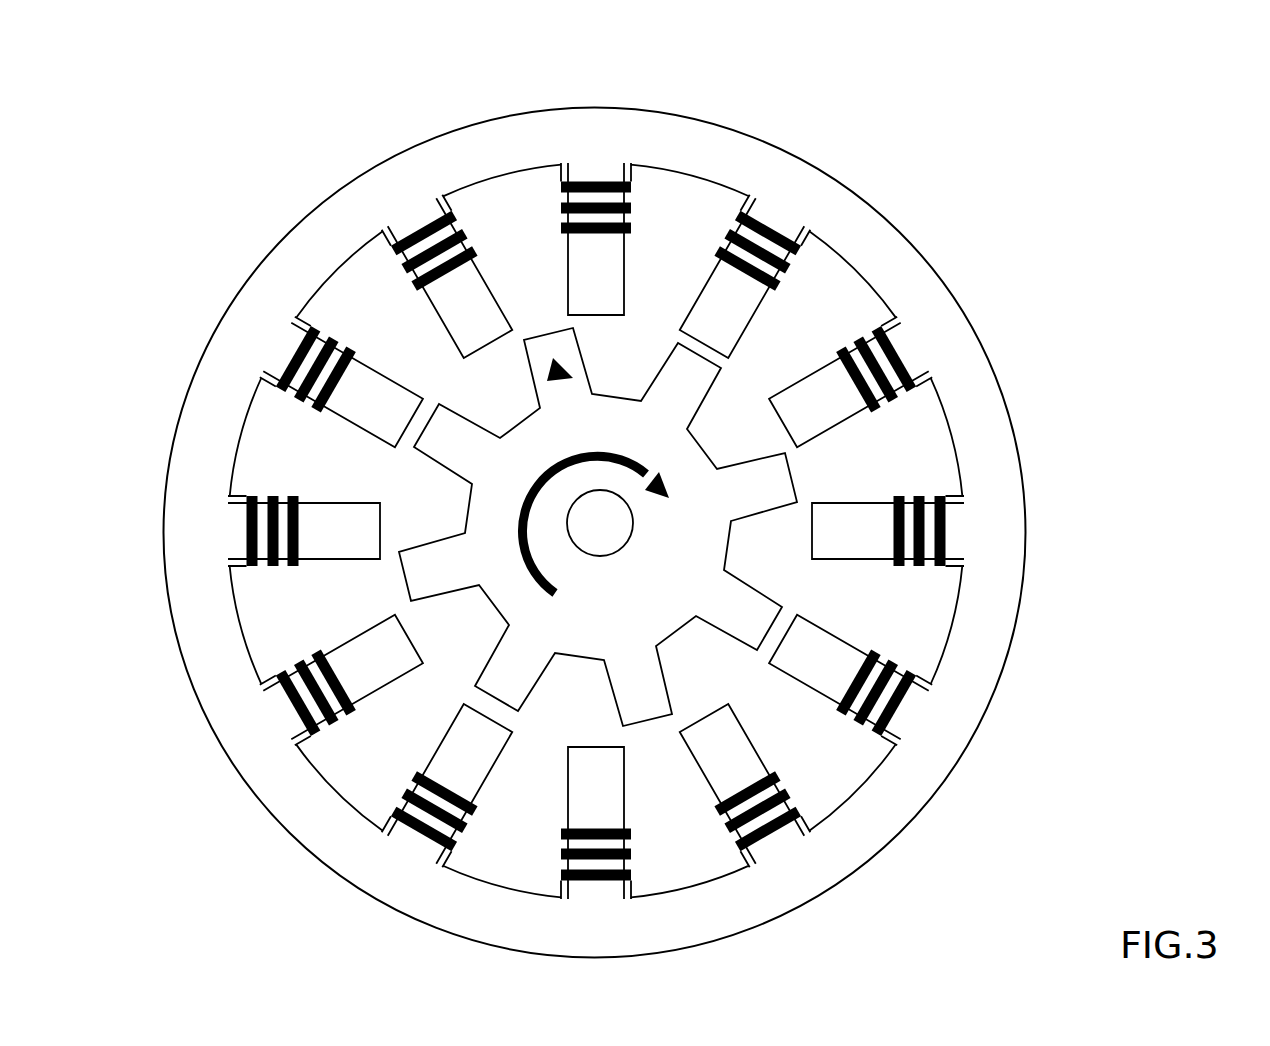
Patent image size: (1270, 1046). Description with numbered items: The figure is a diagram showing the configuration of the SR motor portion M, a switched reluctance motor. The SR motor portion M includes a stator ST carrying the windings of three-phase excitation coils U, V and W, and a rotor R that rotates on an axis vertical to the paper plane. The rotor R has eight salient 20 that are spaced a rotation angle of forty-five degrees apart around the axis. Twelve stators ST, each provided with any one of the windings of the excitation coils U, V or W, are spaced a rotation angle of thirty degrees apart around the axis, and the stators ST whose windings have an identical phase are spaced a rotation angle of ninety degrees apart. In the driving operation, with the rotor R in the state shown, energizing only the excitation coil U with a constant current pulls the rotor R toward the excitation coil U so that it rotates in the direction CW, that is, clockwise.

The SR motor portion M is at (1010, 228).
The stator ST is at (480, 272).
The rotor R is at (677, 580).
The salient 20 is at (580, 352).
The direction CW (clockwise) CW is at (607, 524).